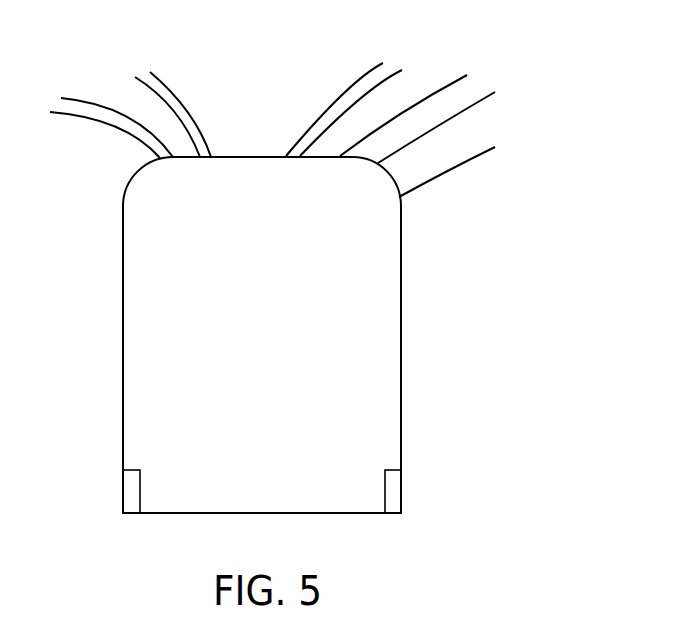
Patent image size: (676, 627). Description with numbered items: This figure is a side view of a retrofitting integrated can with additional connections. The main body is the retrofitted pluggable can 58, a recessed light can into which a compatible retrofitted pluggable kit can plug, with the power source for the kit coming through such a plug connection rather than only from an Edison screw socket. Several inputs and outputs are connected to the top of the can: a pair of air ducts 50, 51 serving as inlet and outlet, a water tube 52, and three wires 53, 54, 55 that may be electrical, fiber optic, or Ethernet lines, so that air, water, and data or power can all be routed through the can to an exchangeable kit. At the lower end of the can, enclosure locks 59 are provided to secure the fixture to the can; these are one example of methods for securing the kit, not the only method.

The air duct 50 is at (342, 93).
The air duct 51 is at (192, 117).
The water tube 52 is at (135, 122).
The wire 53 is at (428, 92).
The wire 54 is at (450, 120).
The wire 55 is at (457, 177).
The retrofitted pluggable can 58 is at (415, 283).
The enclosure lock 59 is at (392, 493).